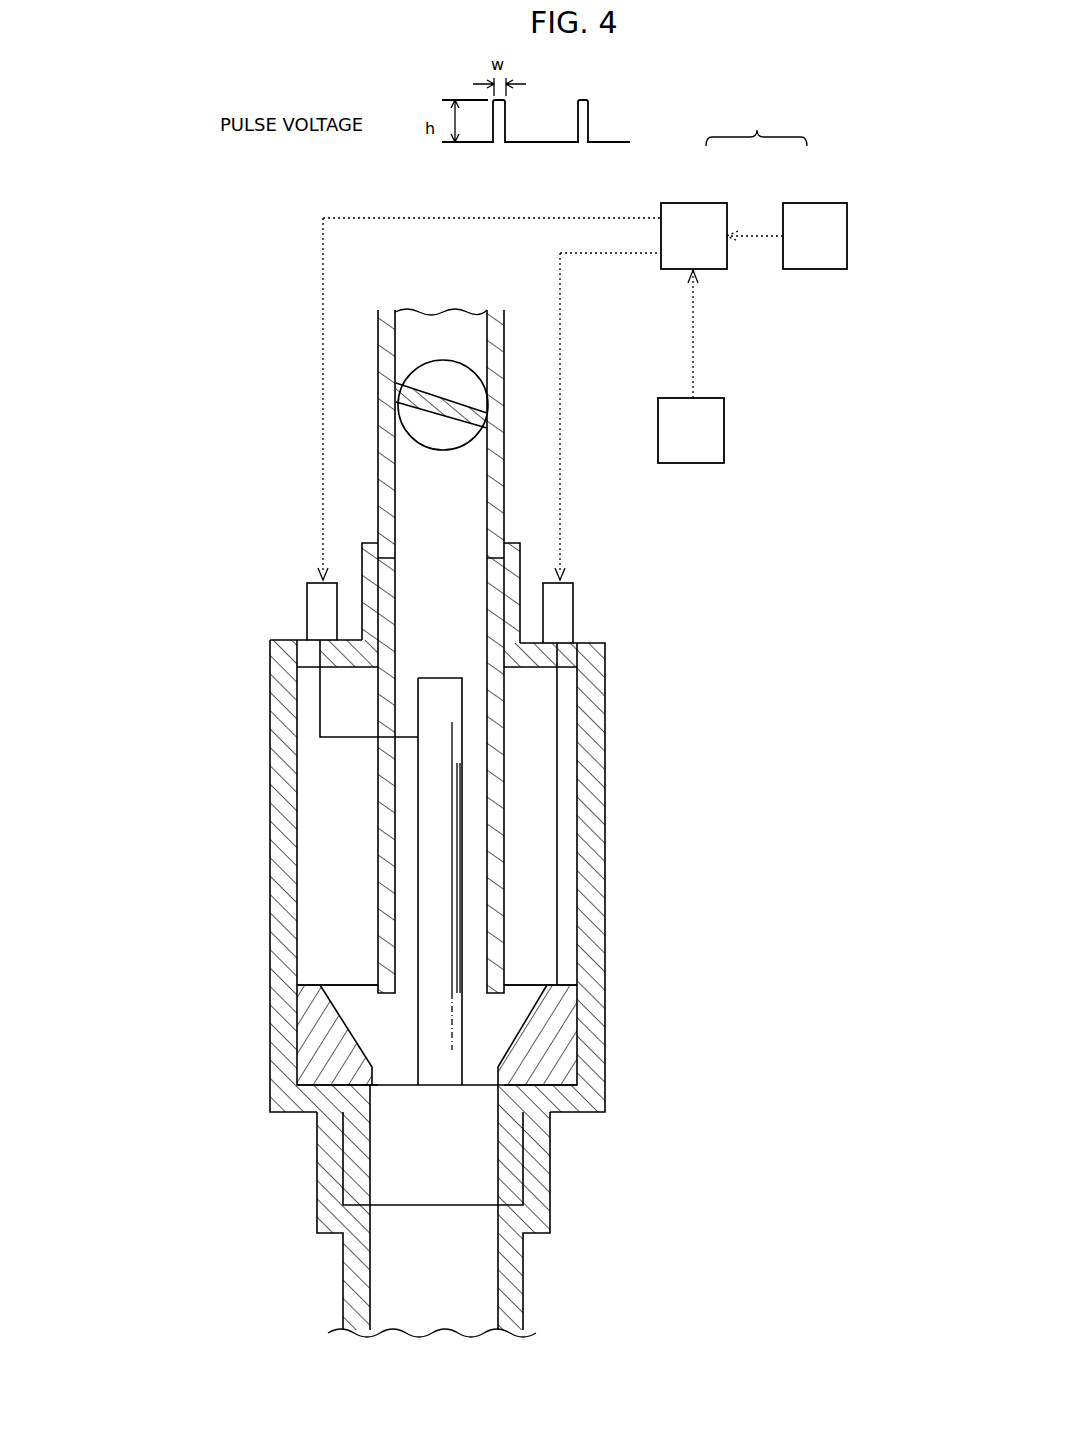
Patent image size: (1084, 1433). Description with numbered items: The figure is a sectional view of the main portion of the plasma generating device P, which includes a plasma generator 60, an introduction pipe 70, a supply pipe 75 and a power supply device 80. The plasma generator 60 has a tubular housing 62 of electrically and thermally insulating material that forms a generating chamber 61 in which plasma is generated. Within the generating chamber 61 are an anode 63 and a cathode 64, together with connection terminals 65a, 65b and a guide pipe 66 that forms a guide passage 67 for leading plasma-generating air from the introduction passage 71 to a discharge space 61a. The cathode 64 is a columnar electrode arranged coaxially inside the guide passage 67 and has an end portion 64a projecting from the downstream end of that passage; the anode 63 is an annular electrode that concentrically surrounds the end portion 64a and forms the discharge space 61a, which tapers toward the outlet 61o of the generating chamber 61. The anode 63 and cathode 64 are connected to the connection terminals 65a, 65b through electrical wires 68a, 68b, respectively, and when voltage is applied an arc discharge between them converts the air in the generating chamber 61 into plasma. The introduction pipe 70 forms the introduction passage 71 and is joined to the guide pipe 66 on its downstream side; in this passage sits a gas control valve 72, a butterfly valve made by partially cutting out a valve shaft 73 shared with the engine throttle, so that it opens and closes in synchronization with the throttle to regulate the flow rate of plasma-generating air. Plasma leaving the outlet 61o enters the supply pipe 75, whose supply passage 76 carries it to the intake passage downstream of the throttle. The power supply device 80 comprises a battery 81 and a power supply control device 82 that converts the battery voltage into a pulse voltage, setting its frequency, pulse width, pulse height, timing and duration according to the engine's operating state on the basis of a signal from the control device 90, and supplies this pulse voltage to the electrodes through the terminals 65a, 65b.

The plasma generating device P is at (233, 407).
The plasma generator 60 is at (641, 856).
The generating chamber 61 is at (325, 830).
The discharge space 61a is at (375, 1005).
The outlet 61o is at (470, 1140).
The housing 62 is at (585, 920).
The anode 63 is at (553, 1049).
The cathode 64 is at (430, 878).
The end portion 64a is at (435, 1031).
The connection terminal 65a is at (558, 605).
The connection terminal 65b is at (313, 603).
The guide pipe 66 is at (497, 745).
The guide passage 67 is at (408, 790).
The electrical wire 68a is at (557, 727).
The electrical wire 68b is at (298, 690).
The introduction pipe 70 is at (388, 334).
The introduction passage 71 is at (463, 330).
The gas control valve 72 is at (452, 398).
The valve shaft 73 is at (417, 417).
The supply pipe 75 is at (530, 1268).
The supply passage 76 is at (400, 1262).
The power supply device 80 is at (756, 124).
The battery 81 is at (800, 203).
The power supply control device 82 is at (705, 203).
The control device 90 is at (724, 433).